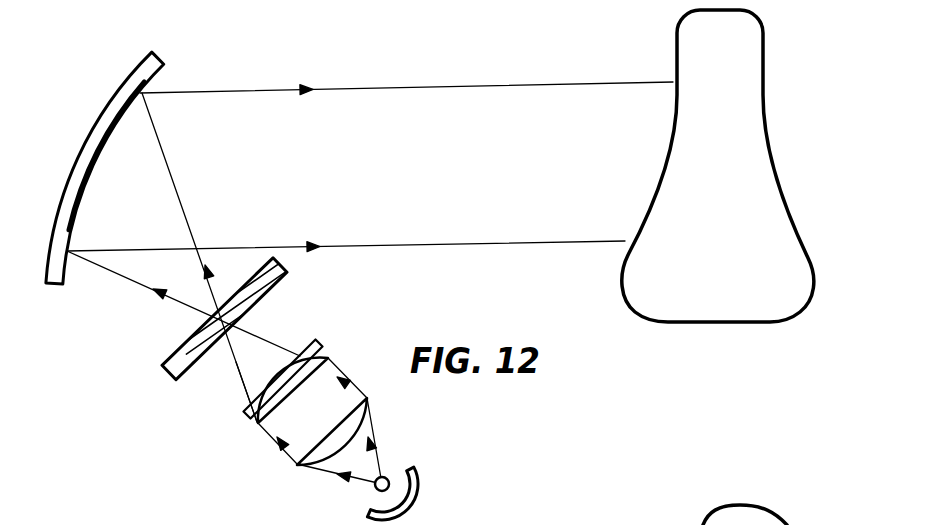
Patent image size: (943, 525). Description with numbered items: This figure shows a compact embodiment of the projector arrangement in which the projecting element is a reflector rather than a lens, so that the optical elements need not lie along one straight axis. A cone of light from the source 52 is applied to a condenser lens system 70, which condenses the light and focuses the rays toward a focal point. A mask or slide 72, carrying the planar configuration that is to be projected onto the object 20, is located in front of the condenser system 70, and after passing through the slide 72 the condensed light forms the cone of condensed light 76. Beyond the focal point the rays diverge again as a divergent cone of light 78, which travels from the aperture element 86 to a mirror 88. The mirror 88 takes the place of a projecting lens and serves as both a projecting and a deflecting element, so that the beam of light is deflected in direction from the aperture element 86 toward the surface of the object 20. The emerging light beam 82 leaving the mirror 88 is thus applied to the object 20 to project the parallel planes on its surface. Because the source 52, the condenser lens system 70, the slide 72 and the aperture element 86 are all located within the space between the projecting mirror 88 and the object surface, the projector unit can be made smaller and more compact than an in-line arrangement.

The object 20 is at (711, 227).
The source 52 is at (387, 467).
The condenser lens system 70 is at (355, 370).
The mask or slide 72 is at (318, 340).
The cone of condensed light 76 is at (240, 368).
The divergent cone of light 78 is at (178, 183).
The emerging light beam 82 is at (398, 85).
The aperture element 86 is at (288, 269).
The mirror 88 is at (118, 98).